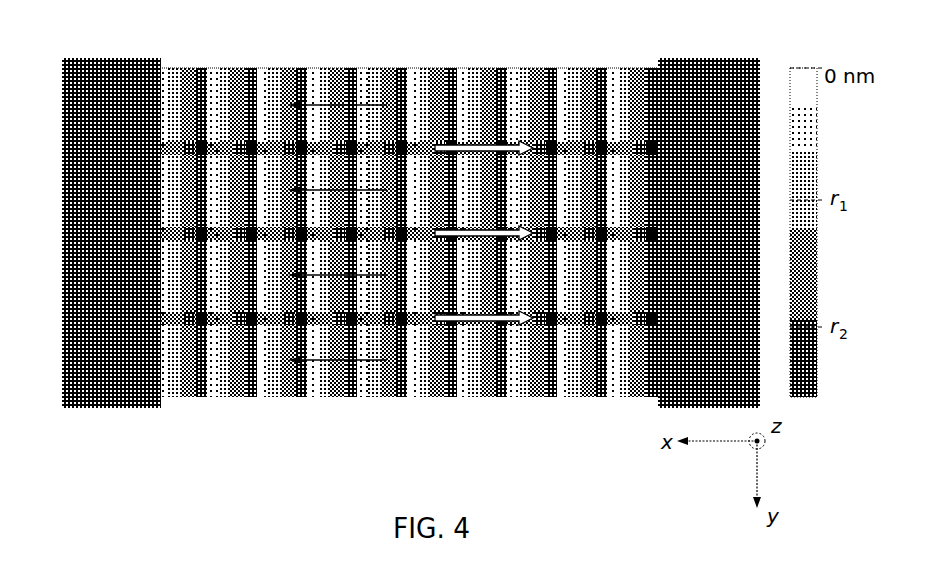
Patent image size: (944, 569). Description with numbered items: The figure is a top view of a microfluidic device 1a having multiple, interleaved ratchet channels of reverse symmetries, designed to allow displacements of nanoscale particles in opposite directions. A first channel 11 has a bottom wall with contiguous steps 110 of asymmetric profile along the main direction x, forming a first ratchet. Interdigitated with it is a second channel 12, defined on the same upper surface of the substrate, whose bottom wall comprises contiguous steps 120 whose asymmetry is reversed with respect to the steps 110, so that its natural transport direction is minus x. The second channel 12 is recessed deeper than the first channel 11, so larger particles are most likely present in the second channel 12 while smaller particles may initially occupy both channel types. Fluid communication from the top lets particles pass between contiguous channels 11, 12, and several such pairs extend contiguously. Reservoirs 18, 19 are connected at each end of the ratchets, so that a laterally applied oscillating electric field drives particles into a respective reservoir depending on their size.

The microfluidic device 1a is at (411, 268).
The first channel 11 is at (639, 340).
The second channel 12 is at (231, 304).
The reservoir 18 is at (86, 410).
The reservoir 19 is at (715, 78).
The steps 110 is at (230, 381).
The steps 120 is at (579, 324).